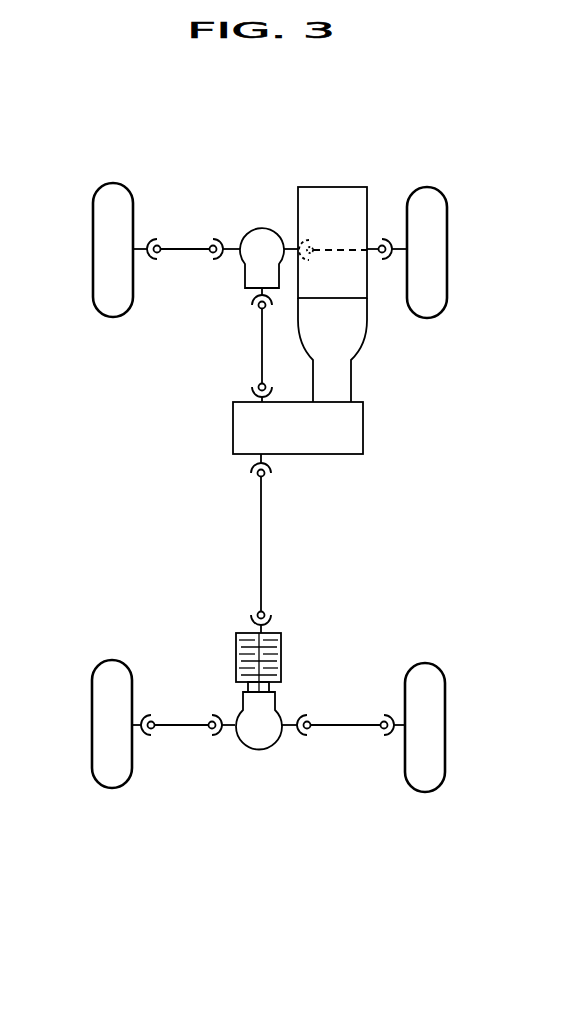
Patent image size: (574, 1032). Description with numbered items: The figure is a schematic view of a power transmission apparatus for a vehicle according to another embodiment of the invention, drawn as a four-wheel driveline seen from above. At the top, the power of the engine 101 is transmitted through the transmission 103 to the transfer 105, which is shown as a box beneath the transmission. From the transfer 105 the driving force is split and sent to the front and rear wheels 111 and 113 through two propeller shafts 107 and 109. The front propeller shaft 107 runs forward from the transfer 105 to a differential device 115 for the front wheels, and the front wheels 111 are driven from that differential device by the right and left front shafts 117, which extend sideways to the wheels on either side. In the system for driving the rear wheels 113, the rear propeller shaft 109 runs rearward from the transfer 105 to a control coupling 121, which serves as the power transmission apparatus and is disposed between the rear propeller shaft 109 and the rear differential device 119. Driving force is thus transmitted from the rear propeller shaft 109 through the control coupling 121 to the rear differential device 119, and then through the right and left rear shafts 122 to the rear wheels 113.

The engine 101 is at (333, 187).
The transmission 103 is at (351, 372).
The transfer 105 is at (363, 430).
The front propeller shaft 107 is at (262, 350).
The rear propeller shaft 109 is at (261, 526).
The front wheels 111 is at (108, 183).
The rear wheels 113 is at (112, 660).
The differential device for the front wheels 115 is at (252, 232).
The right and left front shafts 117 is at (182, 247).
The rear differential device 119 is at (259, 750).
The control coupling 121 is at (236, 652).
The right and left rear shafts 122 is at (186, 726).